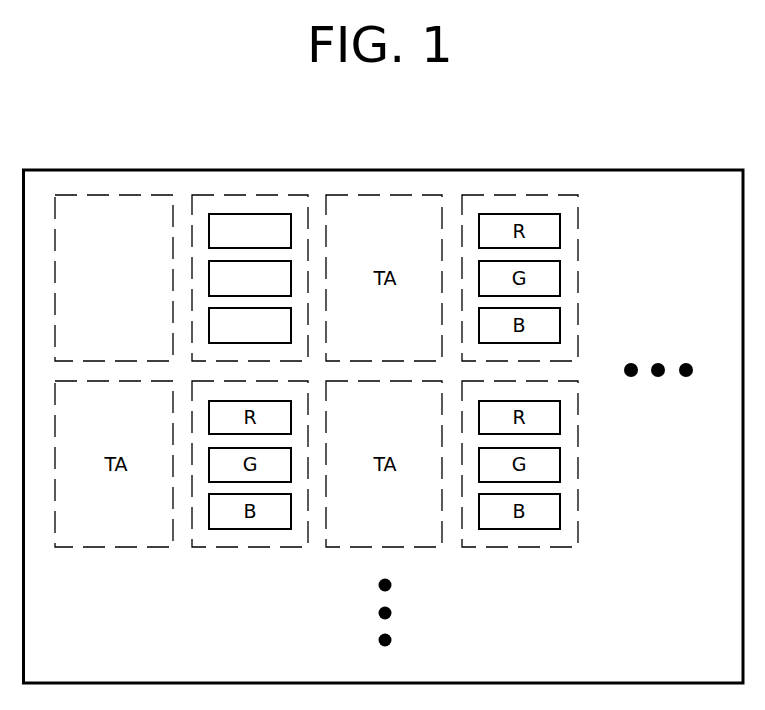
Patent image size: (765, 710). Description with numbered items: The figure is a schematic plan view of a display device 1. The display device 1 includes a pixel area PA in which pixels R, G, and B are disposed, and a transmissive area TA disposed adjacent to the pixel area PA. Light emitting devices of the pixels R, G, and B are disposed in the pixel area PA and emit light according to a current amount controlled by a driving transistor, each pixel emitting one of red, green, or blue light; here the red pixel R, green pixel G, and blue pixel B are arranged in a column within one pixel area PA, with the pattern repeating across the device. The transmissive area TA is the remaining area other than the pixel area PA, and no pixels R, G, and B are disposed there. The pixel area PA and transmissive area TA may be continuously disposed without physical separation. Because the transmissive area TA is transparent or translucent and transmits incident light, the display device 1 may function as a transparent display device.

The display device 1 is at (383, 170).
The pixel area PA is at (237, 193).
The transmissive area TA is at (114, 278).
The red pixel R is at (250, 231).
The green pixel G is at (250, 278).
The blue pixel B is at (250, 325).